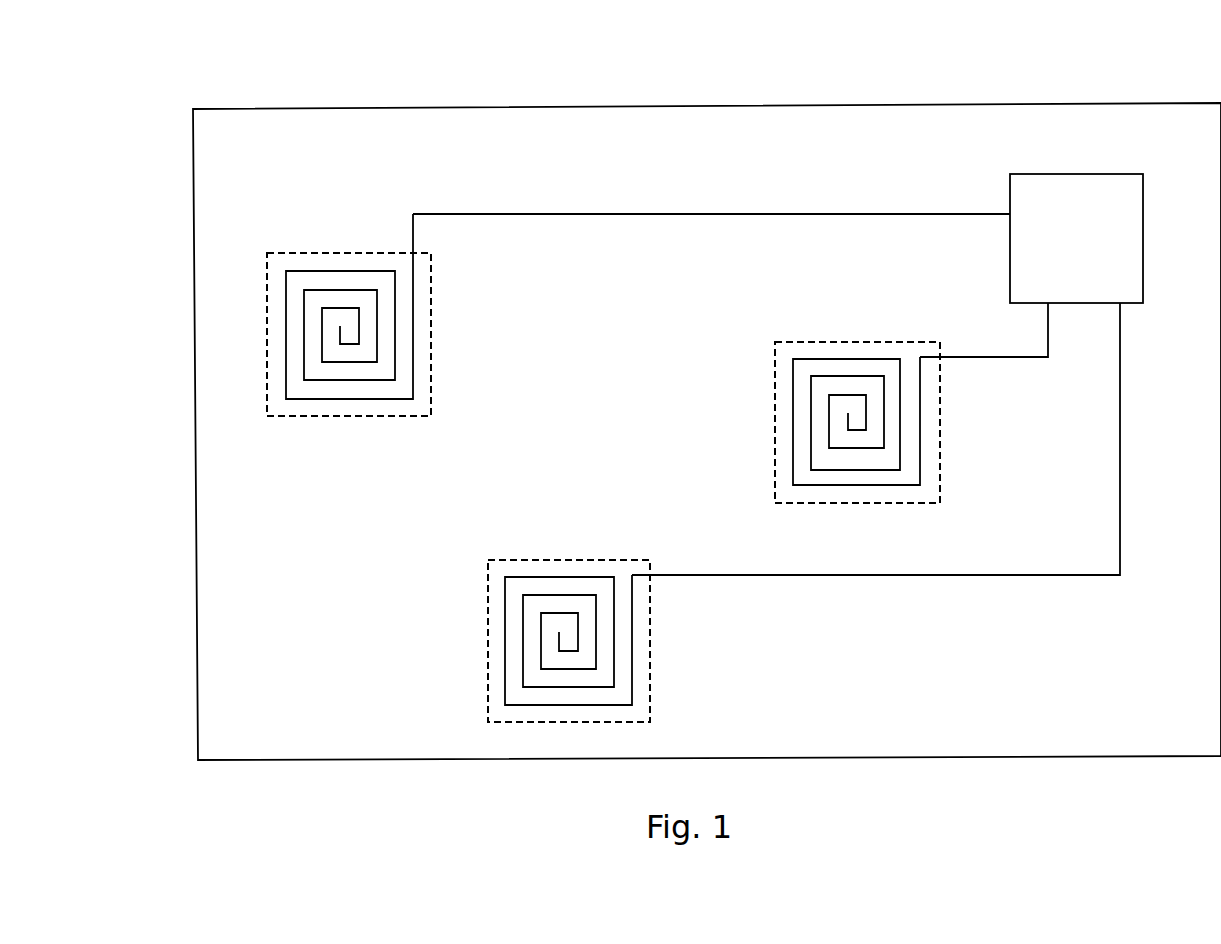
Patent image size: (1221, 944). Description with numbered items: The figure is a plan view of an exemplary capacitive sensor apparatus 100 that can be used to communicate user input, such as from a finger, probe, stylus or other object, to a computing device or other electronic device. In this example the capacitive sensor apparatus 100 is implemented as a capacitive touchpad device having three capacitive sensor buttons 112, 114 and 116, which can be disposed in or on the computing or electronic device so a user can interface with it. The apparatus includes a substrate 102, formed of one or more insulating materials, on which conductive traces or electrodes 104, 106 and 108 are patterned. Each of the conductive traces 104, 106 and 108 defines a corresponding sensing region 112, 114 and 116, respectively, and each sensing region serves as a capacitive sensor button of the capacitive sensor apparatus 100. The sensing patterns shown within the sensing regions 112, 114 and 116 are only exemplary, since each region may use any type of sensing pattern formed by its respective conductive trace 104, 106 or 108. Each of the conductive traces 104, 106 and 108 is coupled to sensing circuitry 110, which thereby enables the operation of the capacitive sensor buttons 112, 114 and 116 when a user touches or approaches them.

The capacitive sensor apparatus 100 is at (149, 69).
The substrate 102 is at (267, 159).
The conductive trace 104 is at (739, 213).
The conductive trace 106 is at (992, 360).
The conductive trace 108 is at (938, 577).
The sensing circuitry 110 is at (1059, 290).
The capacitive sensor button 112 is at (431, 378).
The capacitive sensor button 114 is at (775, 467).
The capacitive sensor button 116 is at (488, 685).